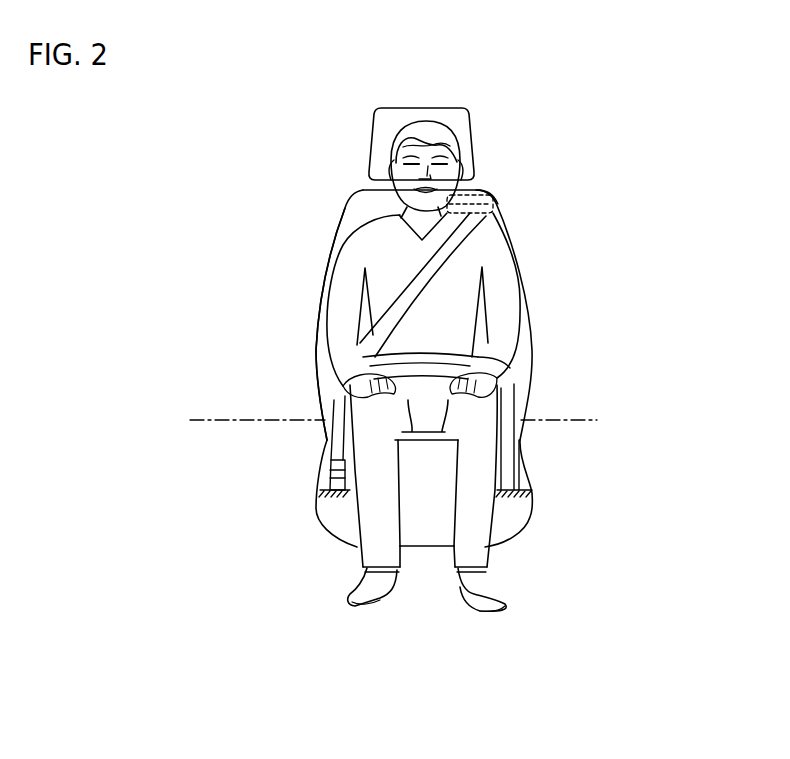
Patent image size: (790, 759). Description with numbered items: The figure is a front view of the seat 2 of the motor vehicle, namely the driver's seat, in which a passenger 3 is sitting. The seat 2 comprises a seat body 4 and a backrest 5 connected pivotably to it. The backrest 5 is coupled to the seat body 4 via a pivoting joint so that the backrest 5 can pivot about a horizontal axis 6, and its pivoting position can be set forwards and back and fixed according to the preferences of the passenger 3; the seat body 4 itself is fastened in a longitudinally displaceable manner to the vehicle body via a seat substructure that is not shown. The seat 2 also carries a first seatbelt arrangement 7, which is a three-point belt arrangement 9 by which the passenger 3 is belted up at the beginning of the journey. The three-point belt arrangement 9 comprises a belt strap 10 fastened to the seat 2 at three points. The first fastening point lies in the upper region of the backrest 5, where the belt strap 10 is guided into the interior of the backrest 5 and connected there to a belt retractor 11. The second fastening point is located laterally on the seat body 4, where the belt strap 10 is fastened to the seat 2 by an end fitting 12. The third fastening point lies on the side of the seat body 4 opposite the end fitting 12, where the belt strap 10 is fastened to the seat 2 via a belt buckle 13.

The seat 2 is at (544, 168).
The passenger 3 is at (369, 222).
The seat body 4 is at (534, 519).
The backrest 5 is at (315, 325).
The horizontal axis 6 is at (203, 420).
The first seatbelt arrangement 7 is at (495, 168).
The three-point belt arrangement 9 is at (500, 161).
The belt strap 10 is at (424, 285).
The belt retractor 11 is at (495, 214).
The end fitting 12 is at (534, 490).
The belt buckle 13 is at (330, 485).